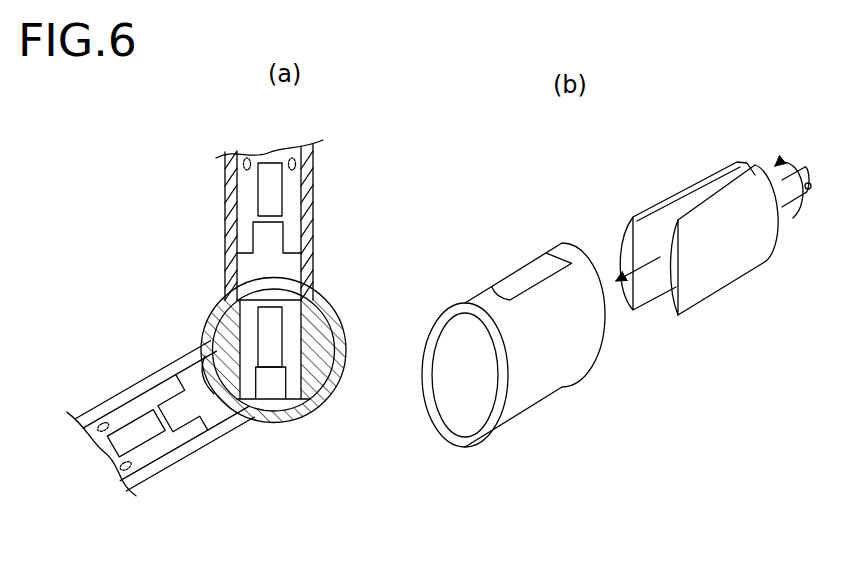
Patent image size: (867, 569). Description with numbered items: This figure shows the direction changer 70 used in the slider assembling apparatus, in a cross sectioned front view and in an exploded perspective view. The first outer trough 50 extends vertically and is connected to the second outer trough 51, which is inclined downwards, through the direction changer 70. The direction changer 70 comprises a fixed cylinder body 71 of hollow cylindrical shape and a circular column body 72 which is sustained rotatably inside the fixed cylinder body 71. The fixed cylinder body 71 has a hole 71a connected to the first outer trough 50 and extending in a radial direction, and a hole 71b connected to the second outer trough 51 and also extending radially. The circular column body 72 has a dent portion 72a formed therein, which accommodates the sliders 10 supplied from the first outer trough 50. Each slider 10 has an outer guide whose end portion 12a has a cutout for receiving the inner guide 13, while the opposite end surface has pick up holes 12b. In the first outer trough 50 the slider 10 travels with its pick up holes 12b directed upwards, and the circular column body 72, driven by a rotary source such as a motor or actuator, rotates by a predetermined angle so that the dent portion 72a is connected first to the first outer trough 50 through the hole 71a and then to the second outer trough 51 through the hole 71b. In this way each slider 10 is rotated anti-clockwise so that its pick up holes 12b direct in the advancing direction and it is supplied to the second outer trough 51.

The slider 10 is at (245, 200).
The end portion 12a is at (247, 157).
The pick up holes 12b is at (288, 155).
The inner guide 13 is at (273, 185).
The first outer trough 50 is at (313, 197).
The second outer trough 51 is at (180, 467).
The direction changer 70 is at (338, 296).
The fixed cylinder body 71 is at (343, 365).
The hole 71a is at (262, 282).
The hole 71b is at (197, 360).
The circular column body 72 is at (318, 382).
The dent portion 72a is at (703, 192).